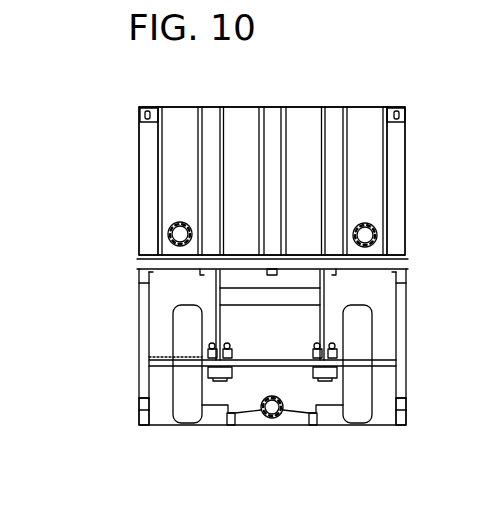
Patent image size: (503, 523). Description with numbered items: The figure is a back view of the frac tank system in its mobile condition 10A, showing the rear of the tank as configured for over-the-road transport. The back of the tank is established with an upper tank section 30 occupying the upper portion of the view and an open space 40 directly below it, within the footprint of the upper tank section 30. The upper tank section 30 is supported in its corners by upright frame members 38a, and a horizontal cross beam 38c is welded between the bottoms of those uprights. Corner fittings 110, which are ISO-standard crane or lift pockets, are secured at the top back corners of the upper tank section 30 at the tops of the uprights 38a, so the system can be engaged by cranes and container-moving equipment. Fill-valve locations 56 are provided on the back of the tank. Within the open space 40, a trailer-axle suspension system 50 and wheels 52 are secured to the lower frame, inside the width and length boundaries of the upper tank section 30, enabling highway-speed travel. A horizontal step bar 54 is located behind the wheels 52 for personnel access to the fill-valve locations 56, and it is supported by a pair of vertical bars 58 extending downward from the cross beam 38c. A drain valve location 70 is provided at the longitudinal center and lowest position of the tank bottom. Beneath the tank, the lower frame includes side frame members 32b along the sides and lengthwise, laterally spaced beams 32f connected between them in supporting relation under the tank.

The mobile condition of the frac tank system 10A is at (271, 100).
The upper tank section 30 is at (370, 185).
The upright frame members 38a is at (148, 148).
The horizontal cross beam 38c is at (146, 252).
The corner fittings 110 is at (153, 106).
The fill-valve locations 56 is at (192, 232).
The open space 40 is at (376, 330).
The trailer-axle suspension system 50 is at (342, 302).
The vertical bars 58 is at (319, 338).
The horizontal step bar 54 is at (388, 365).
The wheels 52 is at (175, 318).
The drain valve location 70 is at (273, 418).
The laterally spaced beams 32f is at (223, 426).
The side frame members 32b is at (138, 403).